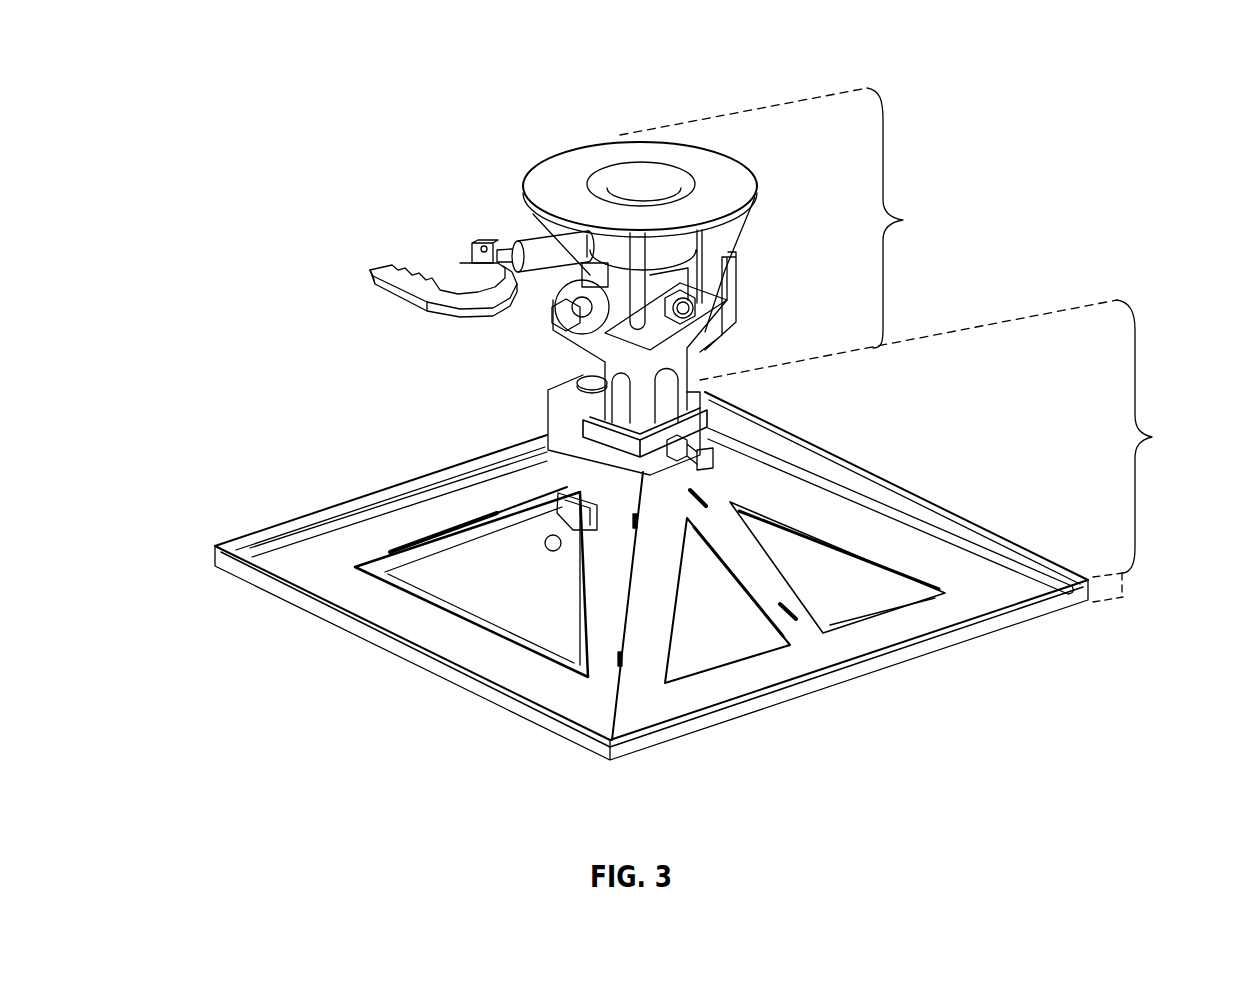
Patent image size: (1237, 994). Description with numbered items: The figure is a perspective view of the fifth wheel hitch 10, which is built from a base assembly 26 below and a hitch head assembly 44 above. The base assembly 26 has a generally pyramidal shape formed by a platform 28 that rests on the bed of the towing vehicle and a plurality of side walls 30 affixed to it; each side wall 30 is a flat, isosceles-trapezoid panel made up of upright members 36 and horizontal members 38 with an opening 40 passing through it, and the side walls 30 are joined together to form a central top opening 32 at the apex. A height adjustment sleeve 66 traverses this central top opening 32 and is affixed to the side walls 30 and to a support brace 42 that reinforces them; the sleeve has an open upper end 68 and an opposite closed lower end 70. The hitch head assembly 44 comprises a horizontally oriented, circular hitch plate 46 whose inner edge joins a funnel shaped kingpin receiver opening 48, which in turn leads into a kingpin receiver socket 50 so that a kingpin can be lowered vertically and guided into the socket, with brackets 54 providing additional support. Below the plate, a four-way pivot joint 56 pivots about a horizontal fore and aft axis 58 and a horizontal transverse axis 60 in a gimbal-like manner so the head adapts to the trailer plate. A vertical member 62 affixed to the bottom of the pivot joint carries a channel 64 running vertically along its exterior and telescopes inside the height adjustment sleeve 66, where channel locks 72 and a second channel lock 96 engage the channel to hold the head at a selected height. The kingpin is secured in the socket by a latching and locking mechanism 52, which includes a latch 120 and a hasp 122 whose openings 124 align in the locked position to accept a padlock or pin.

The fifth wheel hitch 10 is at (360, 90).
The base assembly 26 is at (944, 436).
The platform 28 is at (1123, 583).
The side wall 30 is at (610, 602).
The central top opening 32 is at (717, 410).
The upright member 36 is at (862, 540).
The horizontal member 38 is at (970, 600).
The opening 40 is at (522, 615).
The support brace 42 is at (423, 560).
The hitch head assembly 44 is at (776, 218).
The hitch plate 46 is at (742, 180).
The funnel shaped kingpin receiver opening 48 is at (642, 177).
The kingpin receiver socket 50 is at (623, 193).
The latching and locking mechanism 52 is at (337, 247).
The bracket 54 is at (733, 224).
The four-way pivot joint 56 is at (740, 290).
The fore and aft axis 58 is at (531, 292).
The transverse axis 60 is at (762, 305).
The vertical member 62 is at (693, 372).
The channel 64 is at (664, 410).
The height adjustment sleeve 66 is at (620, 453).
The open upper end 68 is at (546, 452).
The closed lower end 70 is at (643, 483).
The channel lock 72 is at (585, 538).
The second channel lock 96 is at (757, 437).
The latch 120 is at (474, 242).
The hasp 122 is at (508, 240).
The opening 124 is at (484, 240).